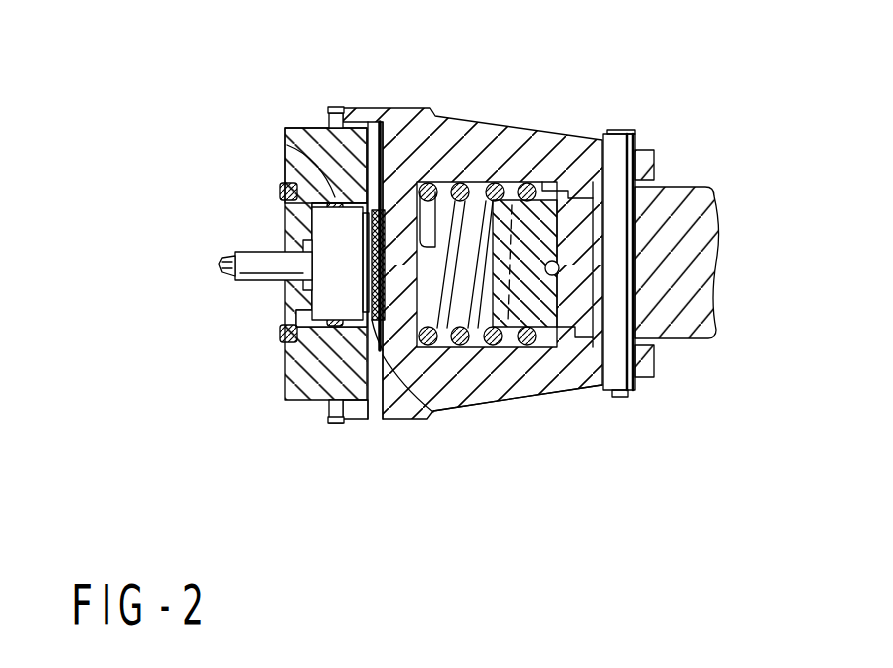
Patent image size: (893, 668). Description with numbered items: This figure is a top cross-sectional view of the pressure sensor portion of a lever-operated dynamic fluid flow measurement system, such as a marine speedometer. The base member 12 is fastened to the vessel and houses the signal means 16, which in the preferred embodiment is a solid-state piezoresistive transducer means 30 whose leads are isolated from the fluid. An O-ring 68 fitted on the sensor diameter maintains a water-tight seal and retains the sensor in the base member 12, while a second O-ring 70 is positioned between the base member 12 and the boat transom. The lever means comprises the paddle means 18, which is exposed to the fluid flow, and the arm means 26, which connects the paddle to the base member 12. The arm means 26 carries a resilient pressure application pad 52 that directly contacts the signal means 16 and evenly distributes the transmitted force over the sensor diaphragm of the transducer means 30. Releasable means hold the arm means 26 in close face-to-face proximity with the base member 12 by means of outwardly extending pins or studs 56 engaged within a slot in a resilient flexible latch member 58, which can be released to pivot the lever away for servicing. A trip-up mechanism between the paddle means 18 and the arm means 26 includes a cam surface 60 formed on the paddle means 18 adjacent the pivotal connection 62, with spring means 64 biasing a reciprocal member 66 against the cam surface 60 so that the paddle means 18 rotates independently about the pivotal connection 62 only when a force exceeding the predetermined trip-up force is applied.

The base member 12 is at (285, 378).
The signal means 16 is at (332, 282).
The paddle means 18 is at (675, 187).
The arm means 26 is at (543, 393).
The solid-state piezoresistive transducer means 30 is at (320, 235).
The resilient pressure application pad 52 is at (433, 412).
The pins or studs 56 is at (337, 103).
The latch member 58 is at (327, 112).
The cam surface 60 is at (560, 274).
The pivotal connection 62 is at (608, 129).
The spring means 64 is at (445, 185).
The reciprocal member 66 is at (510, 182).
The O-ring 68 is at (297, 143).
The second O-ring 70 is at (280, 190).